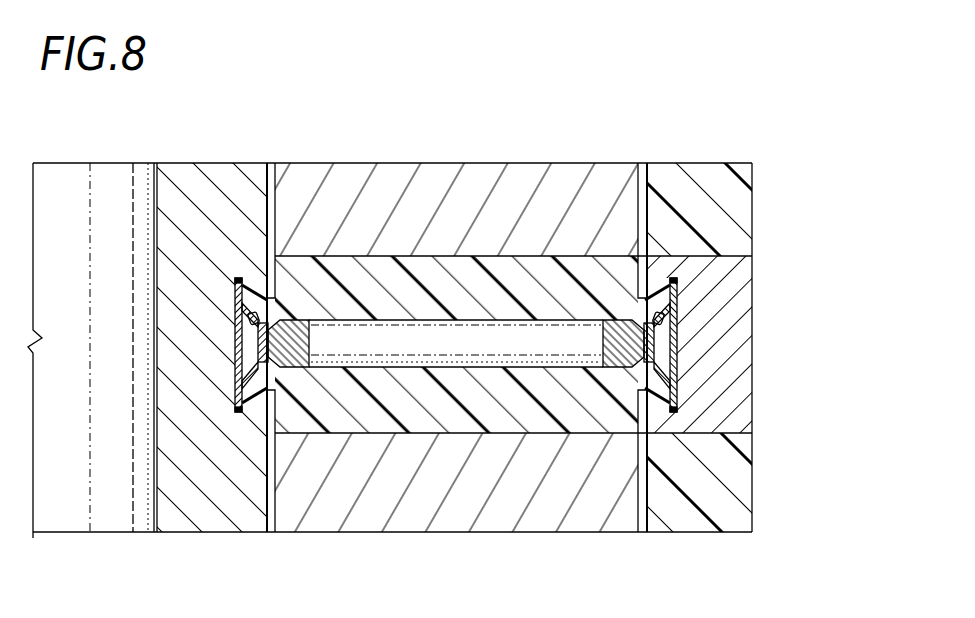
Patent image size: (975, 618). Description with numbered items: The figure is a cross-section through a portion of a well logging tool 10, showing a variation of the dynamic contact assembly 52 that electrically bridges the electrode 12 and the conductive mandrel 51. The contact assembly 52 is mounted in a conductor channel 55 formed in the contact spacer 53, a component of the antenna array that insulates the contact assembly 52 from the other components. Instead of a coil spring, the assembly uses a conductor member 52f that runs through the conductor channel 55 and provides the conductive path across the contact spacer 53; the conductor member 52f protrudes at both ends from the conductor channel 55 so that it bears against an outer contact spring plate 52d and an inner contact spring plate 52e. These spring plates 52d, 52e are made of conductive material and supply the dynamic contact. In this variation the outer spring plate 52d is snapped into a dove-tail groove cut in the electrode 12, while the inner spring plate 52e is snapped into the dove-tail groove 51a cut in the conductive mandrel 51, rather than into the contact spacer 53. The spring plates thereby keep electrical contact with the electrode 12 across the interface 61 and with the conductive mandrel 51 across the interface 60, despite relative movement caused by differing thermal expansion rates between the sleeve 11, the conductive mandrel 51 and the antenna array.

The well logging tool 10 is at (801, 435).
The sleeve 11 is at (723, 507).
The electrode 12 is at (733, 323).
The conductive mandrel 51 is at (193, 507).
The dove-tail groove 51a is at (238, 278).
The contact assembly 52 is at (590, 90).
The outer contact spring plate 52d is at (652, 300).
The inner contact spring plate 52e is at (268, 300).
The conductor member 52f is at (413, 337).
The contact spacer 53 is at (460, 418).
The conductor channel 55 is at (373, 367).
The interface 60 is at (273, 532).
The interface 61 is at (643, 533).